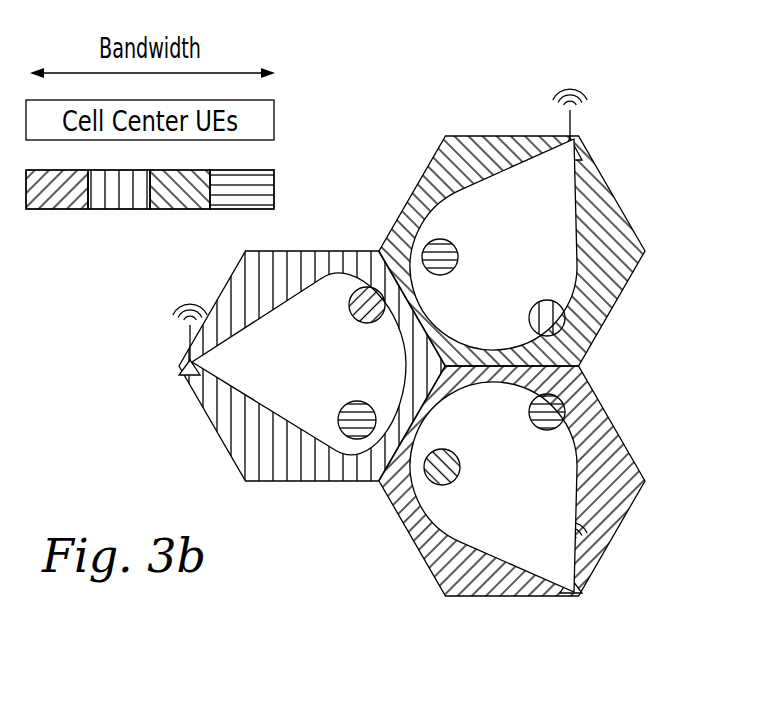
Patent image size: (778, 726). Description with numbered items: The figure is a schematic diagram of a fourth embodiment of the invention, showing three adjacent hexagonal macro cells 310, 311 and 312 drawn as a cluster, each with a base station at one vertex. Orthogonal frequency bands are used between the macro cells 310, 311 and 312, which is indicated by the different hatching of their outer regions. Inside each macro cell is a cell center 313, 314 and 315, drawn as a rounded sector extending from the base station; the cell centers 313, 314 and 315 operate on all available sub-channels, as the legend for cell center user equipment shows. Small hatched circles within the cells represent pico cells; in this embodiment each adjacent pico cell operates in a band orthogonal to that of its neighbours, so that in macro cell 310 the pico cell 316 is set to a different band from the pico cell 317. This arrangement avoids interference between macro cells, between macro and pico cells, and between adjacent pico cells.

The macro cell 310 is at (200, 403).
The macro cell 311 is at (600, 217).
The macro cell 312 is at (607, 498).
The cell center 313 is at (250, 383).
The cell center 314 is at (510, 217).
The cell center 315 is at (547, 455).
The pico cell 316 is at (355, 432).
The pico cell 317 is at (365, 305).